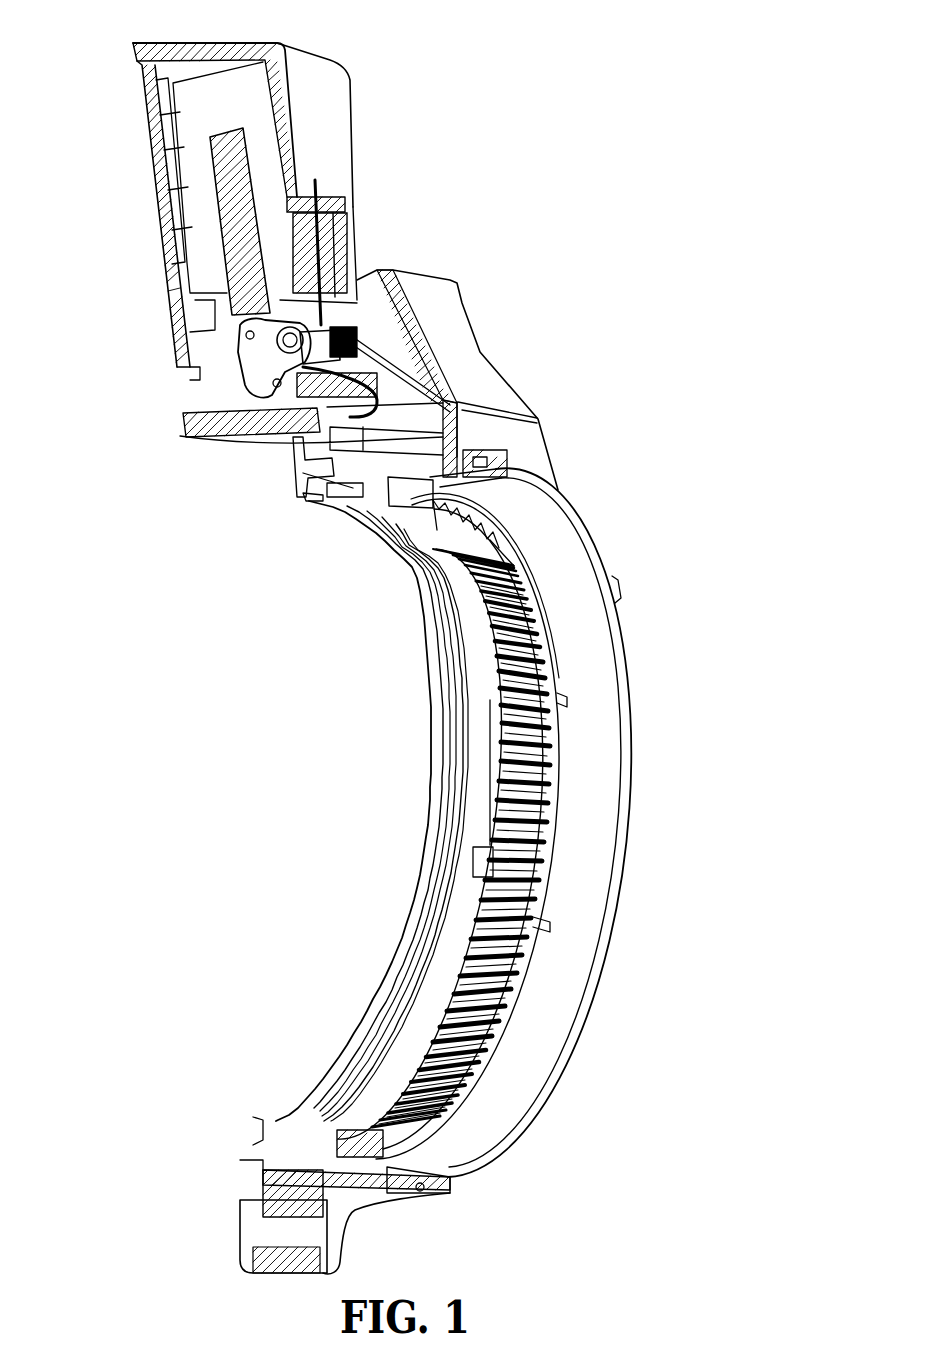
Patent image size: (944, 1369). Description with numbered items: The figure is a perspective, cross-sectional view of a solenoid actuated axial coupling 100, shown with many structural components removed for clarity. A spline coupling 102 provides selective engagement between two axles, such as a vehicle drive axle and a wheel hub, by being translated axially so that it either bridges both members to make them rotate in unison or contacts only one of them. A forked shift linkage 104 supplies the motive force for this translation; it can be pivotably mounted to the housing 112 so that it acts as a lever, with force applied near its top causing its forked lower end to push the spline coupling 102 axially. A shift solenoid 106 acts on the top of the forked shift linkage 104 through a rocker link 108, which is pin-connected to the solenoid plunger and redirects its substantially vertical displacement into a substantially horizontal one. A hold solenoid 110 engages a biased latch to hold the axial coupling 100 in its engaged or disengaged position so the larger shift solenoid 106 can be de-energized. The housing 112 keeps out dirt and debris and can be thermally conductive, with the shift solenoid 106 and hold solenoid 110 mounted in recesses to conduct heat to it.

The solenoid actuated axial coupling 100 is at (668, 79).
The spline coupling 102 is at (547, 803).
The forked shift linkage 104 is at (355, 482).
The shift solenoid 106 is at (260, 118).
The rocker link 108 is at (245, 357).
The hold solenoid 110 is at (335, 227).
The housing 112 is at (430, 328).